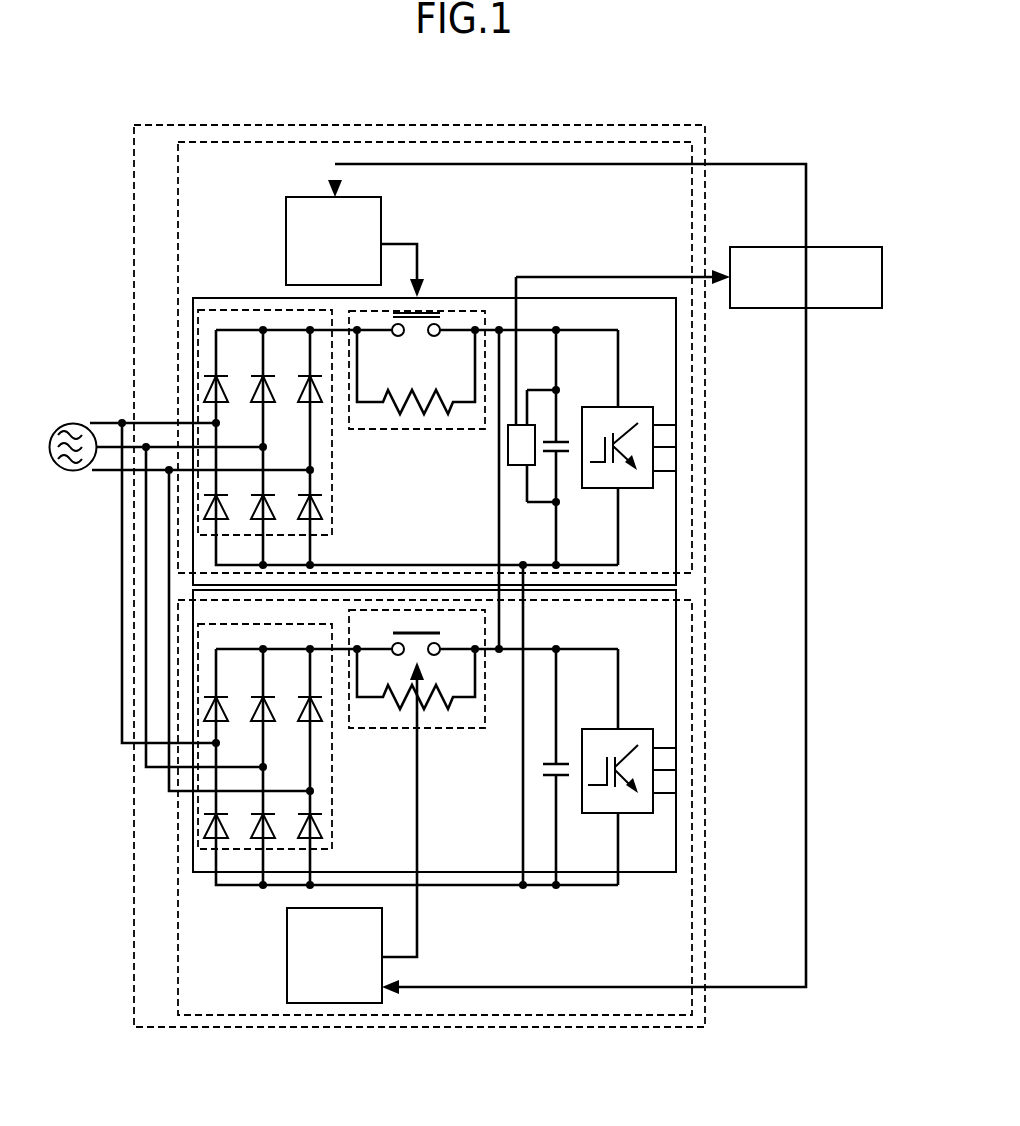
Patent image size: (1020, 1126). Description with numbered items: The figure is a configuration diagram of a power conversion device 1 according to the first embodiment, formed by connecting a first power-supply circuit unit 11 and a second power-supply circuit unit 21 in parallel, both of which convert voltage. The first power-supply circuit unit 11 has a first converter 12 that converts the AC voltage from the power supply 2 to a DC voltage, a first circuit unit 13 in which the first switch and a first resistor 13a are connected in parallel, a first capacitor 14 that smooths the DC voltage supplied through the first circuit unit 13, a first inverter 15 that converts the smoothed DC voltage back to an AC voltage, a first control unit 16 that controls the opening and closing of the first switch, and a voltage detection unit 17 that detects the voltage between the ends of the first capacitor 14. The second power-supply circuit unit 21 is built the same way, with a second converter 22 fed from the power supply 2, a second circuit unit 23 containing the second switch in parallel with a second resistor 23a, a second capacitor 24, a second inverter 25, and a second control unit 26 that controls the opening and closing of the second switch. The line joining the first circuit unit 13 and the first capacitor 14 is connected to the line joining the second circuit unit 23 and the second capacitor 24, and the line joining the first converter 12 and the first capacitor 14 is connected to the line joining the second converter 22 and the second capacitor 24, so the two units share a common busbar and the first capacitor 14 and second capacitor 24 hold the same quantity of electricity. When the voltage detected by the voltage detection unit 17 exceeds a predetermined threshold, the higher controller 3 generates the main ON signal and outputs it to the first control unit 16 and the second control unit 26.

The power conversion device 1 is at (656, 126).
The power supply 2 is at (73, 423).
The higher controller 3 is at (862, 247).
The first power-supply circuit unit 11 is at (604, 141).
The first converter 12 is at (240, 310).
The first circuit unit 13 is at (468, 311).
The first resistor 13a is at (410, 414).
The first capacitor 14 is at (565, 456).
The first inverter 15 is at (633, 407).
The first control unit 16 is at (310, 197).
The voltage detection unit 17 is at (508, 447).
The second power-supply circuit unit 21 is at (228, 1028).
The second converter 22 is at (333, 813).
The second circuit unit 23 is at (375, 730).
The second resistor 23a is at (435, 706).
The second capacitor 24 is at (566, 783).
The second inverter 25 is at (633, 729).
The second control unit 26 is at (286, 937).